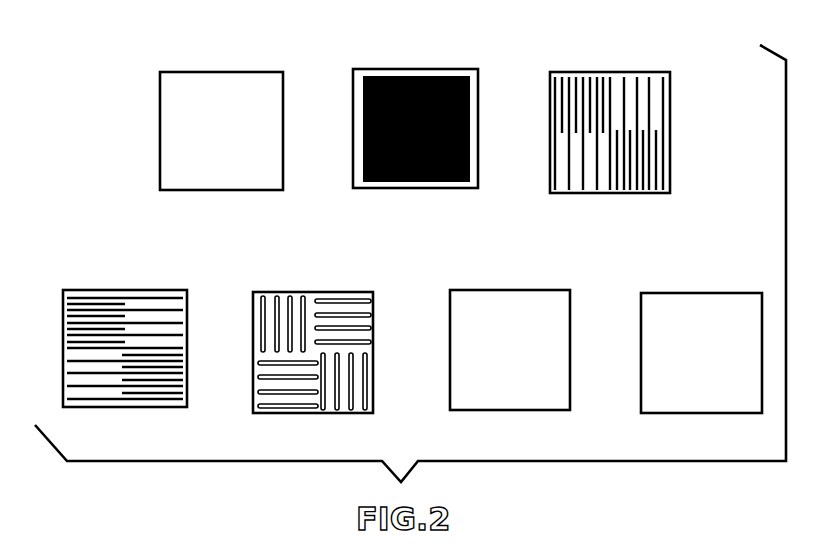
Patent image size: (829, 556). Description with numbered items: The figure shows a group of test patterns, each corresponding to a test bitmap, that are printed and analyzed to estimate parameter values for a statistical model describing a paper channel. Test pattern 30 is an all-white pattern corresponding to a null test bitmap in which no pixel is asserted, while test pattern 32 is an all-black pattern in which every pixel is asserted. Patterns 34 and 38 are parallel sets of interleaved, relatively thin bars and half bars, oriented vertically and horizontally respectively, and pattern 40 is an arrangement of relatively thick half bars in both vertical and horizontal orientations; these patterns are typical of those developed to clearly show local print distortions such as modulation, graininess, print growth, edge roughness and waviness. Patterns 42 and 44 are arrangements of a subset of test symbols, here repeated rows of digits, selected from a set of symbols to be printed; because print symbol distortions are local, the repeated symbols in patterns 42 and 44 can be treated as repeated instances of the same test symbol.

The test pattern 30 is at (220, 72).
The test pattern 32 is at (416, 68).
The pattern 34 is at (608, 72).
The pattern 38 is at (143, 290).
The pattern 40 is at (322, 292).
The pattern 42 is at (523, 290).
The pattern 44 is at (700, 292).